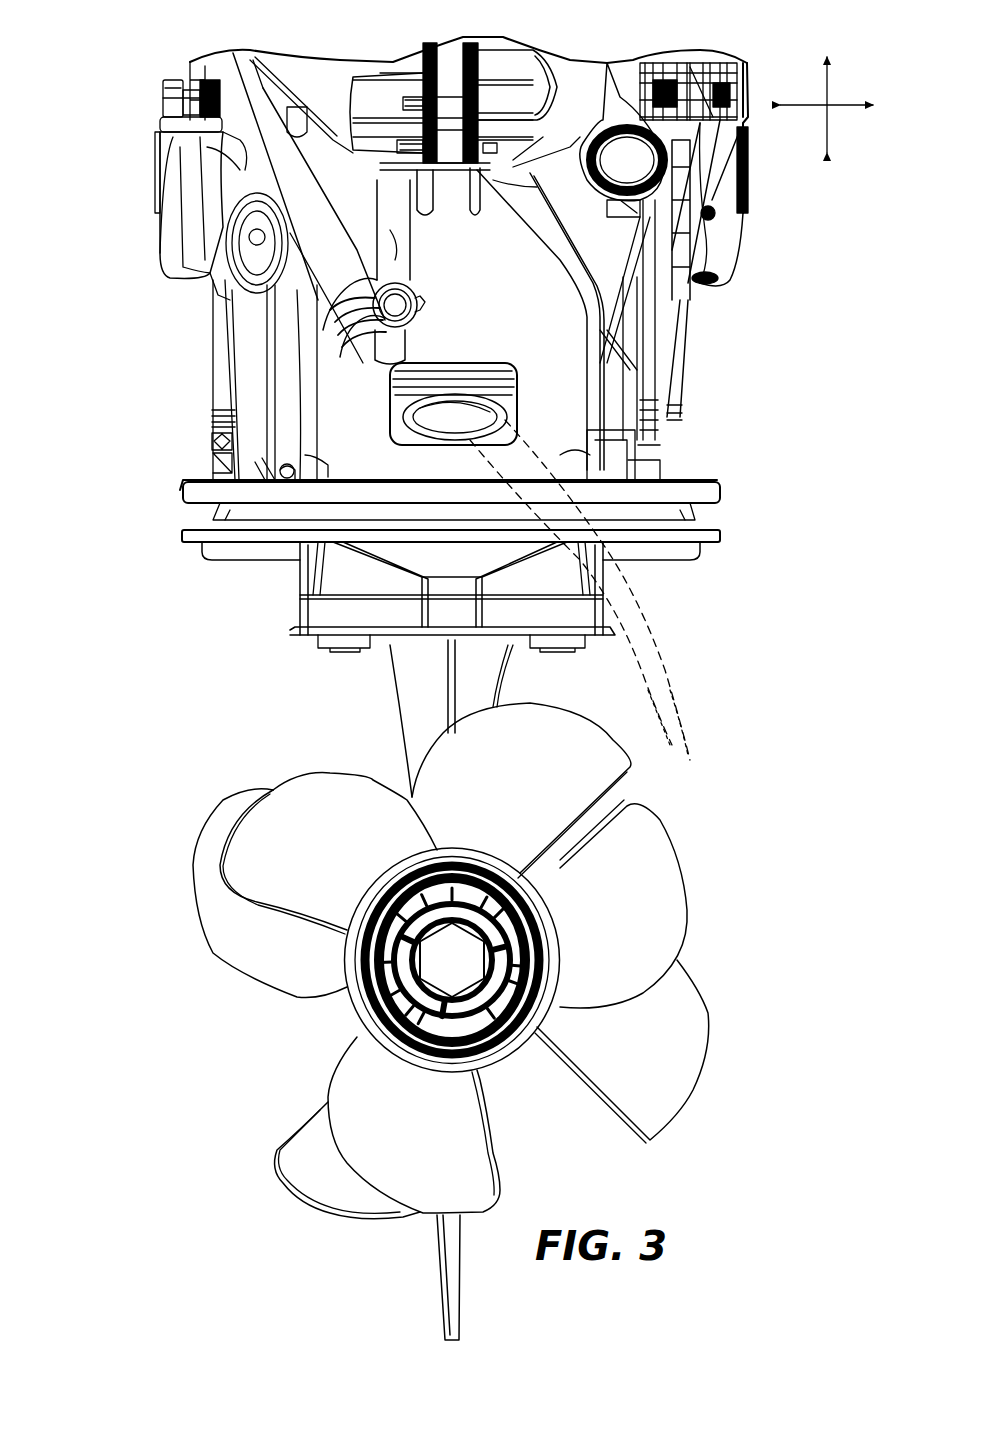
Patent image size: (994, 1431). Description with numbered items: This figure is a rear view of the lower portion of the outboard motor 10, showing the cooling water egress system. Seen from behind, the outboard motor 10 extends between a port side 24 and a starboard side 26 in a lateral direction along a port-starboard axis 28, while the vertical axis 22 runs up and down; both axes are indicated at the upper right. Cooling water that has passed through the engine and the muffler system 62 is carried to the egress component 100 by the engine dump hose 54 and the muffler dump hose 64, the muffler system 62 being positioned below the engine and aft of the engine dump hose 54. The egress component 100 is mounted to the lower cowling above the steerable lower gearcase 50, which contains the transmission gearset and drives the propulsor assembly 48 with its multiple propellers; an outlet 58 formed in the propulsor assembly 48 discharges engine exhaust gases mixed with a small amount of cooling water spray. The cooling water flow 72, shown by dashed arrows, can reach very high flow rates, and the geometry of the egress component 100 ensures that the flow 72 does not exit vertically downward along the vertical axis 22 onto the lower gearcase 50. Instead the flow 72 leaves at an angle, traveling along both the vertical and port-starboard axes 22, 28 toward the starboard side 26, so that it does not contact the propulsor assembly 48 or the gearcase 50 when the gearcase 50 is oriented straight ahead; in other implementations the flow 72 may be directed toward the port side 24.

The outboard motor 10 is at (414, 248).
The vertical axis 22 is at (835, 108).
The port side 24 is at (125, 385).
The starboard side 26 is at (773, 385).
The port-starboard axis 28 is at (830, 92).
The propulsor assembly 48 is at (504, 990).
The lower gearcase 50 is at (313, 612).
The engine dump hose 54 is at (263, 137).
The outlet 58 is at (360, 1015).
The muffler system 62 is at (385, 100).
The muffler dump hose 64 is at (398, 233).
The cooling water flow 72 is at (670, 627).
The egress component 100 is at (370, 358).